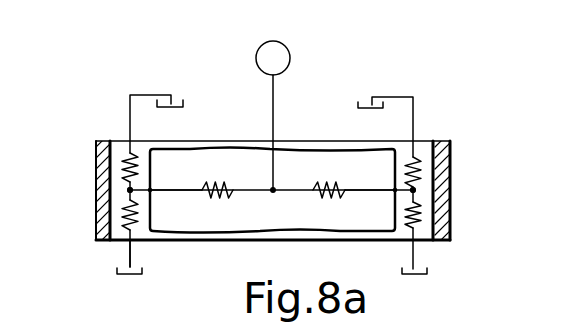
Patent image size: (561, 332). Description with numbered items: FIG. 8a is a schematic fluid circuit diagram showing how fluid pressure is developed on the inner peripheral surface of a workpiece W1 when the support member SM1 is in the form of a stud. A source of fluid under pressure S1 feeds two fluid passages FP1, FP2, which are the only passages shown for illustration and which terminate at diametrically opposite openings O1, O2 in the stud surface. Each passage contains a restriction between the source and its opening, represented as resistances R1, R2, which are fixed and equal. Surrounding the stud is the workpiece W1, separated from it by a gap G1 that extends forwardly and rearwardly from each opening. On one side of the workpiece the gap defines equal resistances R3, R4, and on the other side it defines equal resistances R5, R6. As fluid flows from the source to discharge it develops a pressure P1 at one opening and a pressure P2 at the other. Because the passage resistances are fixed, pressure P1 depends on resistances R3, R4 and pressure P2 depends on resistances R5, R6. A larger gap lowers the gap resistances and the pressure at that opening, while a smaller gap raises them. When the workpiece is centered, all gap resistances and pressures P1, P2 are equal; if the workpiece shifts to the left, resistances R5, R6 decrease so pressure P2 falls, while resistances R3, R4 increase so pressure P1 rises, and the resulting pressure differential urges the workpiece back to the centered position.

The source of fluid under pressure S1 is at (291, 53).
The support member SM1 is at (294, 150).
The workpiece W1 is at (452, 205).
The resistance R1 is at (229, 196).
The resistance R2 is at (323, 198).
The resistance R3 is at (416, 158).
The resistance R4 is at (416, 226).
The resistance R5 is at (127, 156).
The resistance R6 is at (127, 230).
The pressure P1 is at (413, 190).
The pressure P2 is at (130, 190).
The fluid passage FP1 is at (365, 188).
The fluid passage FP2 is at (176, 188).
The opening O1 is at (393, 193).
The opening O2 is at (152, 193).
The gap G1 is at (141, 230).